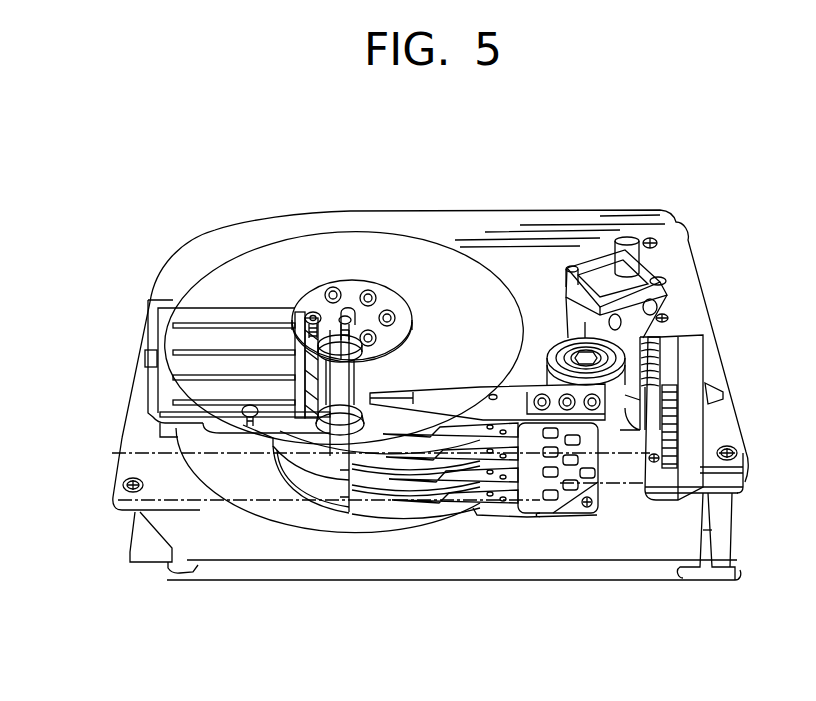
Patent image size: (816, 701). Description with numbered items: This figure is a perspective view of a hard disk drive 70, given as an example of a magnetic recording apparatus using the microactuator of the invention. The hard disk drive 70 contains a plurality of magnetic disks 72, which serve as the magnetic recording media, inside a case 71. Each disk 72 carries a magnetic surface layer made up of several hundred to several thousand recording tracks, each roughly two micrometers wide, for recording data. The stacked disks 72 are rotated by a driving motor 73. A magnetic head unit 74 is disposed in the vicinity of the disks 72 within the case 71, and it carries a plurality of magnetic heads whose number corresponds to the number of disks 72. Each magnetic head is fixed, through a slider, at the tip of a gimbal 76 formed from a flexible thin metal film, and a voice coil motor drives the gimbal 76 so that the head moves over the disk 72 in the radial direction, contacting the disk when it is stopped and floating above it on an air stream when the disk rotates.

The hard disk drive 70 is at (345, 203).
The case 71 is at (522, 217).
The magnetic disk 72 is at (247, 287).
The driving motor 73 is at (322, 458).
The magnetic head unit 74 is at (548, 522).
The gimbal 76 is at (462, 393).